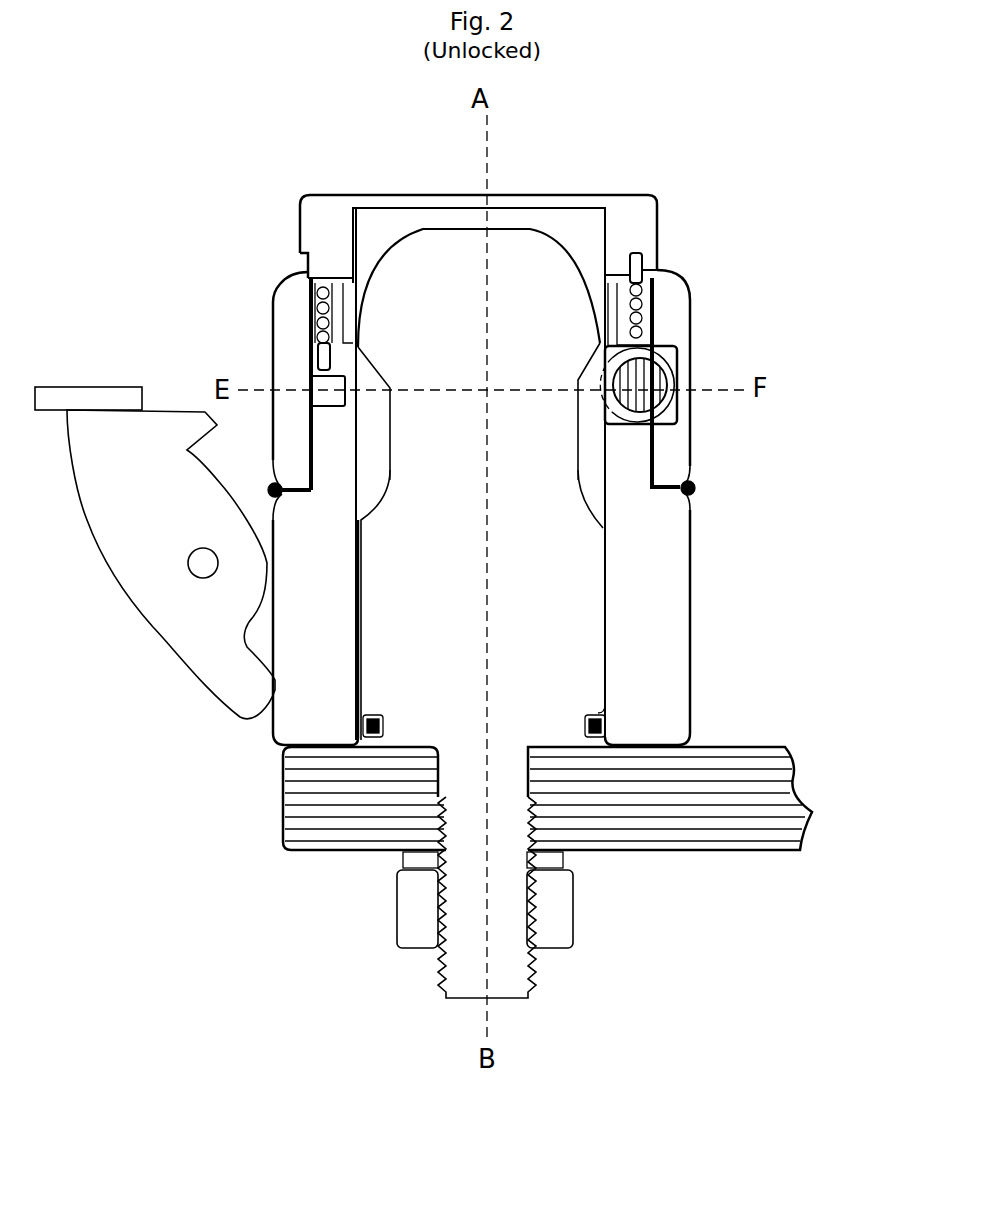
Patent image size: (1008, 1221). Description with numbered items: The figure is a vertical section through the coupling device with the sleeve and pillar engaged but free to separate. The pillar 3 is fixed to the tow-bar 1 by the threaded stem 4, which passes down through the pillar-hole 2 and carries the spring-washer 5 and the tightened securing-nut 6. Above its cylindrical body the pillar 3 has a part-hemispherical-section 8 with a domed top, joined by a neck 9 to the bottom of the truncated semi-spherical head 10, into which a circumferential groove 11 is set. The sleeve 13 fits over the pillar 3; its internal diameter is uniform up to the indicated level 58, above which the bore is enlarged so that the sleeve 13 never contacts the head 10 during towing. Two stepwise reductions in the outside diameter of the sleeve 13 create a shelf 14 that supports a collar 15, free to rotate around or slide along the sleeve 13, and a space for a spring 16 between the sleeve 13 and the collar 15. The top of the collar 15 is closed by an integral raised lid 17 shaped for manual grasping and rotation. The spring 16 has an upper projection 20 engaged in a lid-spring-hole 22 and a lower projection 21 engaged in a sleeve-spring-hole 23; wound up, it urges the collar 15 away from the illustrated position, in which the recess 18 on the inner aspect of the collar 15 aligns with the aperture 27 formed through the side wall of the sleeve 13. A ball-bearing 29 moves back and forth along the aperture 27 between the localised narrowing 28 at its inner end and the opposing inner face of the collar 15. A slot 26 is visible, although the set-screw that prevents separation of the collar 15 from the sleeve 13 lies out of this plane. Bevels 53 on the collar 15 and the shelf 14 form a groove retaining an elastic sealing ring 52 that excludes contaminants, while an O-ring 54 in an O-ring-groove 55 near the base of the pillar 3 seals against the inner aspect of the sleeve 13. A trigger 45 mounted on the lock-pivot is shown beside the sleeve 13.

The tow-bar 1 is at (285, 792).
The pillar-hole 2 is at (533, 817).
The pillar 3 is at (567, 633).
The threaded stem 4 is at (437, 967).
The spring-washer 5 is at (403, 857).
The securing-nut 6 is at (397, 907).
The part-hemispherical-section 8 is at (667, 497).
The neck 9 is at (447, 340).
The head 10 is at (580, 194).
The circumferential groove 11 is at (417, 340).
The sleeve 13 is at (693, 668).
The shelf 14 is at (664, 497).
The collar 15 is at (288, 273).
The spring 16 is at (317, 293).
The raised lid 17 is at (297, 215).
The recess 18 is at (675, 372).
The upper projection 20 is at (637, 257).
The lower projection 21 is at (327, 362).
The lid-spring-hole 22 is at (645, 265).
The sleeve-spring-hole 23 is at (307, 350).
The slot 26 is at (312, 395).
The aperture 27 is at (653, 437).
The localised narrowing 28 is at (575, 420).
The ball-bearing 29 is at (663, 360).
The trigger 45 is at (118, 590).
The elastic sealing ring 52 is at (695, 488).
The bevels 53 is at (690, 467).
The O-ring 54 is at (607, 725).
The O-ring-groove 55 is at (600, 710).
The level 58 is at (597, 350).